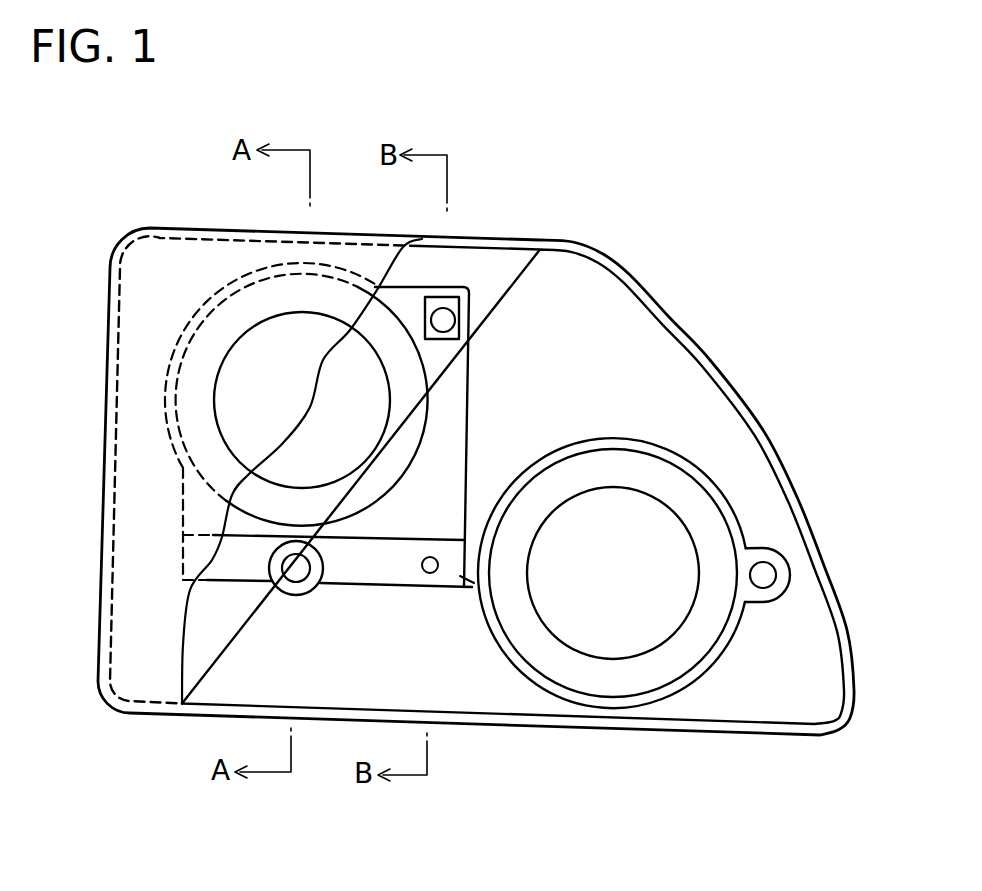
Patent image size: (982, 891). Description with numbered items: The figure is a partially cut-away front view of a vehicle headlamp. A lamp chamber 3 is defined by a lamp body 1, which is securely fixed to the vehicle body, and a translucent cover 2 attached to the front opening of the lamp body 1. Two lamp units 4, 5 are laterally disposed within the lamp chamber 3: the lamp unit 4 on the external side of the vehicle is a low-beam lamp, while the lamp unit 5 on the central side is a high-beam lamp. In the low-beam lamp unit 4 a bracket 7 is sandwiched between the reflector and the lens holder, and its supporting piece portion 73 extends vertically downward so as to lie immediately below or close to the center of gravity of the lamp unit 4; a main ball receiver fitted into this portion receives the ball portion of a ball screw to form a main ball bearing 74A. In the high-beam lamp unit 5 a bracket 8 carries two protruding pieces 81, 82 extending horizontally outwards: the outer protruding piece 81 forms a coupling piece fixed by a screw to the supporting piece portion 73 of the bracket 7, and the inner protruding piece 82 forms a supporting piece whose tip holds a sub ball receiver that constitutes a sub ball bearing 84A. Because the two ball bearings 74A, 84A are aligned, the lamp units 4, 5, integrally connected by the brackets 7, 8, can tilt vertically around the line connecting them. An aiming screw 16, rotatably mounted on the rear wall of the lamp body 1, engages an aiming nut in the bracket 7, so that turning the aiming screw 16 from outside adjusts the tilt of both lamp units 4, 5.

The lamp body 1 is at (677, 320).
The translucent cover 2 is at (128, 653).
The lamp chamber 3 is at (498, 685).
The lamp unit 4 is at (444, 273).
The lamp unit 5 is at (717, 458).
The bracket 7 is at (447, 397).
The bracket 8 is at (723, 503).
The aiming screw 16 is at (455, 320).
The supporting piece portion 73 is at (357, 567).
The main ball bearing 74A is at (292, 570).
The protruding piece 81 is at (467, 580).
The protruding piece 82 is at (783, 575).
The sub ball bearing 84A is at (760, 583).